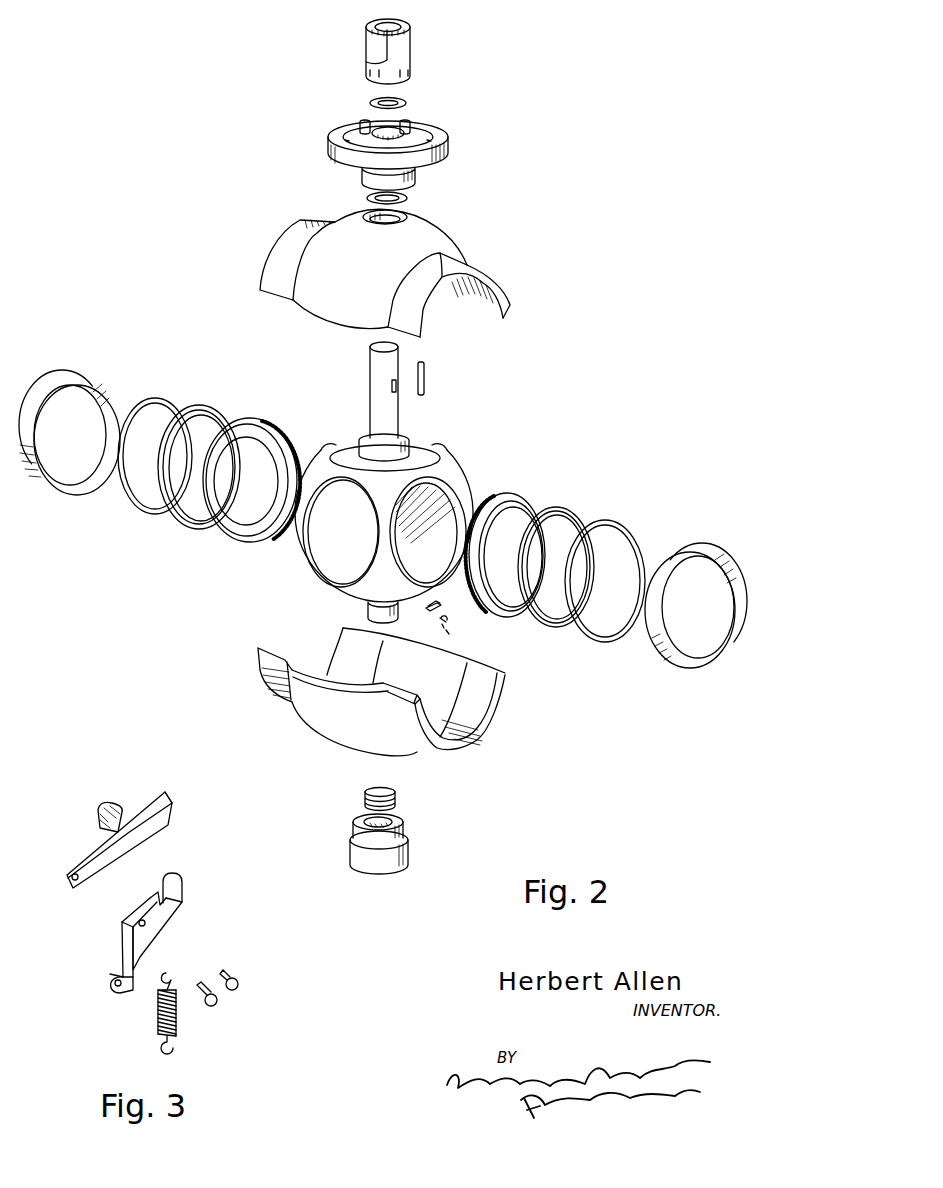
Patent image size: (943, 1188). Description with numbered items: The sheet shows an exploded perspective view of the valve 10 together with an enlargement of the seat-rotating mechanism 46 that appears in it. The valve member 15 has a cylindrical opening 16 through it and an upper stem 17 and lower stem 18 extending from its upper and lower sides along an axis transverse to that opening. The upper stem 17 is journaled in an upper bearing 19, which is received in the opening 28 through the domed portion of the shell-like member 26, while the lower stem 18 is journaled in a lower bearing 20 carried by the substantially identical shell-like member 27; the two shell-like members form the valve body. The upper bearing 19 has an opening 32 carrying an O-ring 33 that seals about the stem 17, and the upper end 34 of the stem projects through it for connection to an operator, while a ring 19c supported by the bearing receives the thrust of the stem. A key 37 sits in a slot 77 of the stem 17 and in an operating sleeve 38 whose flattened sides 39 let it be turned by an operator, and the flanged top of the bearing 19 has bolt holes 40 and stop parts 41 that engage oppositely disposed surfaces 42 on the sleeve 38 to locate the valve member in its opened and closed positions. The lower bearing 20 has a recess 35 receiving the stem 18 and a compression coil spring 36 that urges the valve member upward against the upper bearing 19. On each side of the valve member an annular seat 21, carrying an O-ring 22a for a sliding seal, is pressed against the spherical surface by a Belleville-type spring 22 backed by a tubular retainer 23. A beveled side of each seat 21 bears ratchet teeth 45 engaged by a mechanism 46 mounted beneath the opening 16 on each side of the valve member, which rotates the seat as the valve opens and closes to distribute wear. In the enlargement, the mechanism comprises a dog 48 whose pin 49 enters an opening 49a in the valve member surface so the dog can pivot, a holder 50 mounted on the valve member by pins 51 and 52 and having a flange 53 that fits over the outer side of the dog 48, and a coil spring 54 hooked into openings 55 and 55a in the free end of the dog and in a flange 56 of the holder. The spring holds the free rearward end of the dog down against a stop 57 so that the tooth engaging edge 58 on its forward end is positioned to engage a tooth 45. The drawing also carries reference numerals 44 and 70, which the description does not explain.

In FIG. 2, the valve 10 is at (480, 408).
In FIG. 2, the valve member 15 is at (355, 540).
In FIG. 2, the cylindrical opening 16 is at (443, 546).
In FIG. 2, the upper stem 17 is at (401, 396).
In FIG. 2, the lower stem 18 is at (371, 612).
In FIG. 2, the upper bearing 19 is at (388, 141).
In FIG. 2, the ring 19c is at (368, 197).
In FIG. 2, the lower bearing 20 is at (413, 830).
In FIG. 2, the annular seat 21 is at (407, 505).
In FIG. 2, the Belleville-type spring 22 is at (148, 514).
In FIG. 2, the O-ring 22a is at (205, 406).
In FIG. 2, the tubular retainer 23 is at (64, 495).
In FIG. 2, the shell-like member 26 is at (391, 265).
In FIG. 2, the shell-like member 27 is at (425, 750).
In FIG. 2, the opening 28 is at (410, 216).
In FIG. 2, the opening 32 is at (396, 128).
In FIG. 2, the O-ring 33 is at (368, 103).
In FIG. 2, the upper end of stem 34 is at (400, 352).
In FIG. 2, the recess 35 is at (392, 822).
In FIG. 2, the compression coil spring 36 is at (365, 797).
In FIG. 2, the key 37 is at (426, 380).
In FIG. 2, the operating sleeve 38 is at (417, 67).
In FIG. 2, the flattened sides 39 is at (376, 46).
In FIG. 2, the bolt holes 40 is at (448, 137).
In FIG. 2, the stop parts 41 is at (428, 123).
In FIG. 2, the surfaces 42 is at (363, 74).
In FIG. 2, the seat passage 44 is at (506, 292).
In FIG. 2, the ratchet teeth 45 is at (284, 442).
In FIG. 2, the mechanism 46 is at (478, 621).
In FIG. 3, the mechanism 46 is at (204, 886).
In FIG. 3, the dog 48 is at (125, 844).
In FIG. 3, the pin 49 is at (108, 806).
In FIG. 2, the opening 49a is at (441, 598).
In FIG. 3, the holder 50 is at (148, 920).
In FIG. 3, the pin 51 is at (199, 983).
In FIG. 3, the pin 52 is at (226, 975).
In FIG. 3, the flange 53 is at (174, 874).
In FIG. 3, the coil spring 54 is at (157, 1017).
In FIG. 3, the opening 55 is at (67, 880).
In FIG. 3, the opening 55a is at (113, 974).
In FIG. 3, the flange 56 is at (108, 985).
In FIG. 3, the stop 57 is at (128, 920).
In FIG. 3, the tooth engaging edge 58 is at (167, 793).
In FIG. 2, the flow passage 70 is at (353, 546).
In FIG. 2, the slot 77 is at (398, 386).